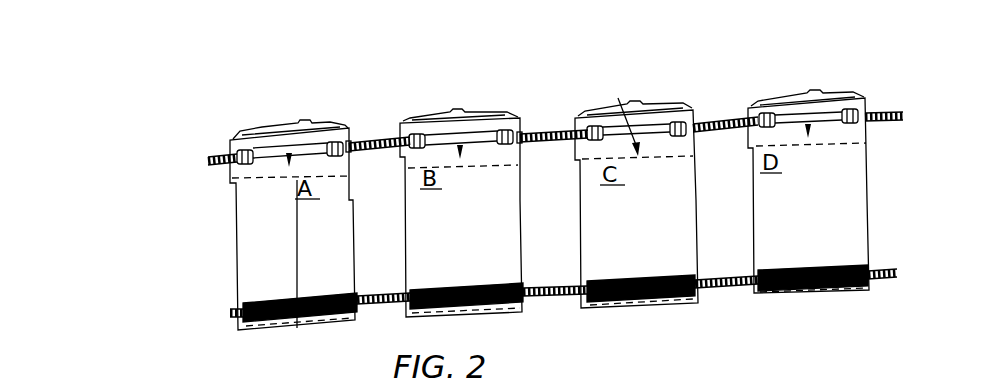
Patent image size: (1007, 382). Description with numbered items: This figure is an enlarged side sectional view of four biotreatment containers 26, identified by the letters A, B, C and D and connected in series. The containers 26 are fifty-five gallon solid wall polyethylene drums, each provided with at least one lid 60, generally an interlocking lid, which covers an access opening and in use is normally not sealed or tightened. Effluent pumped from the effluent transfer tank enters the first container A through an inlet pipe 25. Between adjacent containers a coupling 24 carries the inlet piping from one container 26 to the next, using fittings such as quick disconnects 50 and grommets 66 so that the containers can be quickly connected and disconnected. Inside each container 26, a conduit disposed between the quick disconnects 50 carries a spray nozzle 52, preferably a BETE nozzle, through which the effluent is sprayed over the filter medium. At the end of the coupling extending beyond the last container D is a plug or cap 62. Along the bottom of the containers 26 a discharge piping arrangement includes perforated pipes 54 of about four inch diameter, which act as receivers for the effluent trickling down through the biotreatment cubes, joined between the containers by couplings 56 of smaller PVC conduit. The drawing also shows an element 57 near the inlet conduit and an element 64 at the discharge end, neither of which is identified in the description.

The coupling 24 is at (369, 140).
The inlet pipe 25 is at (212, 166).
The biotreatment container 26 is at (290, 137).
The quick disconnect 50 is at (205, 153).
The spray nozzle 52 is at (251, 150).
The perforated pipe 54 is at (255, 293).
The coupling 56 is at (362, 296).
The shaft section 57 is at (275, 155).
The lid 60 is at (433, 118).
The plug or cap 62 is at (893, 118).
The roller shaft end 64 is at (897, 277).
The grommet 66 is at (350, 140).